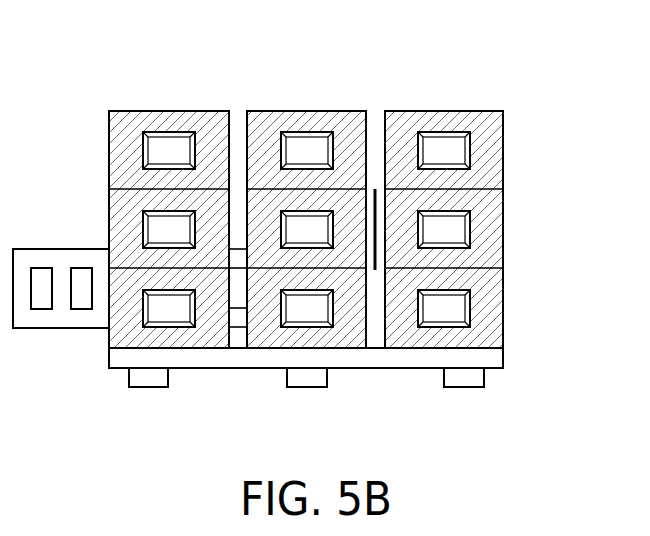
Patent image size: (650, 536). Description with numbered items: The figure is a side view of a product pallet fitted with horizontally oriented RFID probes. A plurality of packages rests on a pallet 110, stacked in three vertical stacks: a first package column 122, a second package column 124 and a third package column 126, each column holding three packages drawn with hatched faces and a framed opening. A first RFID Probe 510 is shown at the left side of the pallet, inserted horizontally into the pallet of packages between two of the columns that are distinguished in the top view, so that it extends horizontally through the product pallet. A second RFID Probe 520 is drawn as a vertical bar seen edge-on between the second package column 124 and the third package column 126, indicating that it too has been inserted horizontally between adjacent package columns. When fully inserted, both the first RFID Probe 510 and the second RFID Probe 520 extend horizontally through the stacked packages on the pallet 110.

The pallet 110 is at (201, 368).
The first package column 122 is at (108, 102).
The second package column 124 is at (245, 102).
The third package column 126 is at (382, 102).
The first RFID Probe 510 is at (58, 249).
The second RFID Probe 520 is at (378, 238).